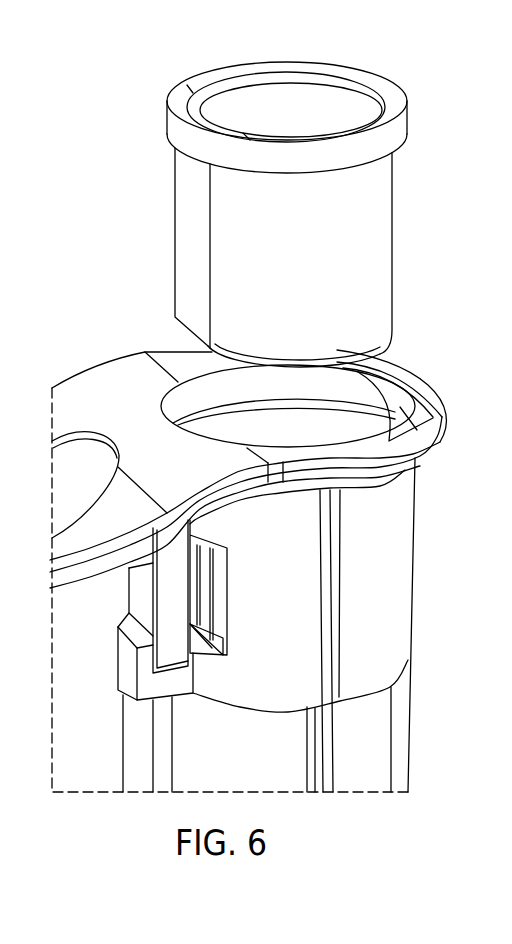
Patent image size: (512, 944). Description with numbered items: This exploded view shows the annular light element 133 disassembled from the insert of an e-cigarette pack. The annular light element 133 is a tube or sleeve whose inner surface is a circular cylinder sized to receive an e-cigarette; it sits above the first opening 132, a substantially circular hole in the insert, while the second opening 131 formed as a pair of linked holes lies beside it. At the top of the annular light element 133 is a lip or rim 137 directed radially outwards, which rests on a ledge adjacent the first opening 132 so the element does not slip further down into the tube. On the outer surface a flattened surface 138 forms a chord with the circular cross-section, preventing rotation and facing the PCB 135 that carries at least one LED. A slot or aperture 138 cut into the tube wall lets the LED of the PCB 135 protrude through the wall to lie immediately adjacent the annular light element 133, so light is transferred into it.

The second opening 131 is at (256, 553).
The first opening 132 is at (322, 418).
The annular light element 133 is at (282, 209).
The PCB 135 is at (177, 603).
The lip or rim 137 is at (182, 102).
The flattened surface 138 is at (192, 270).